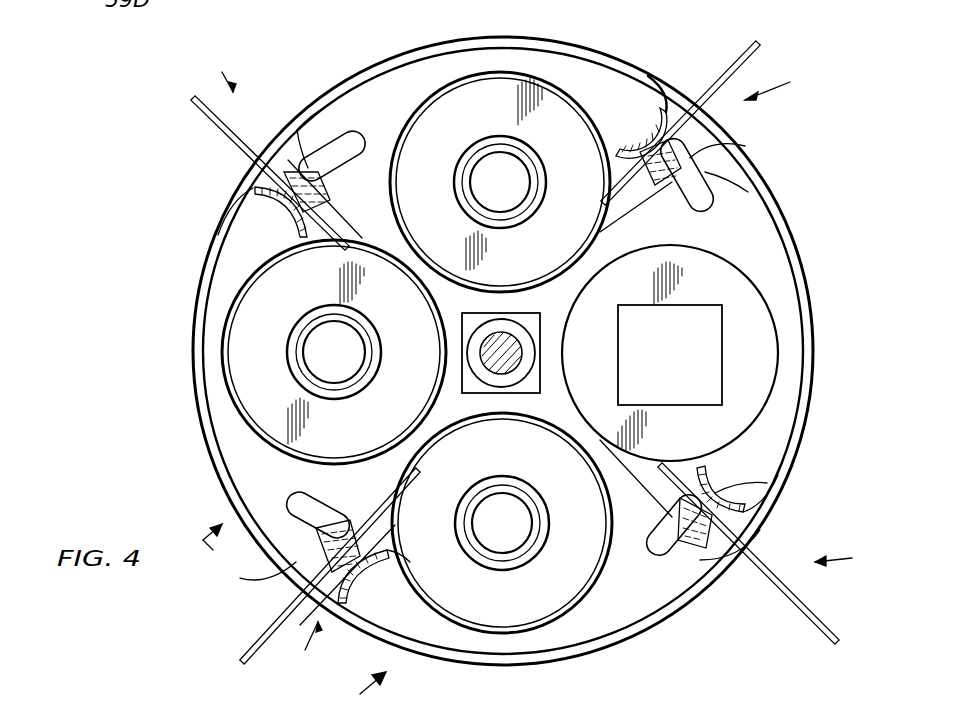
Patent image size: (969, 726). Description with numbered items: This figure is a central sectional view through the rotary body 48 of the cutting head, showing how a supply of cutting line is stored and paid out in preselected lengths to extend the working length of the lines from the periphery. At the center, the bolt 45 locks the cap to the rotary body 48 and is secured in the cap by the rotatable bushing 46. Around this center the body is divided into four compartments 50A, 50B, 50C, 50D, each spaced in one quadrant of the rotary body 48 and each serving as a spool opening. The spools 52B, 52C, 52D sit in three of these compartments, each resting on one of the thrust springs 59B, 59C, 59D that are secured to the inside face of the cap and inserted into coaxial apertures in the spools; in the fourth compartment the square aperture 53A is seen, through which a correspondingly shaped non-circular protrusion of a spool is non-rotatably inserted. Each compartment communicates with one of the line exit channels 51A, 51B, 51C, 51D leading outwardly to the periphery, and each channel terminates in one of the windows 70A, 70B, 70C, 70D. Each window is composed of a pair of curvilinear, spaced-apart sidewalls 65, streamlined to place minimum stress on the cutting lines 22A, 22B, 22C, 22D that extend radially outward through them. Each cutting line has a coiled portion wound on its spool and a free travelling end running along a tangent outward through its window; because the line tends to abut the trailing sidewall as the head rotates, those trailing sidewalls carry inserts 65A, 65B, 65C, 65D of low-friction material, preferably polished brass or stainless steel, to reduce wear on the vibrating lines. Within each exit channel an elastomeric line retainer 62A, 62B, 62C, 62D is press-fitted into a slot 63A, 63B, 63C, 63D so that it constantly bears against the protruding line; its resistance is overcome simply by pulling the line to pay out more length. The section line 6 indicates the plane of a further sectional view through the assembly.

The section line 6 is at (295, 601).
The cutting line 22A is at (840, 636).
The cutting line 22B is at (762, 44).
The cutting line 22C is at (270, 173).
The cutting line 22D is at (240, 660).
The bolt 45 is at (522, 358).
The rotatable bushing 46 is at (505, 318).
The rotary body 48 is at (811, 432).
The compartment 50A is at (748, 288).
The compartment 50B is at (532, 70).
The compartment 50C is at (226, 344).
The compartment 50D is at (570, 620).
The line exit channel 51A is at (652, 478).
The line exit channel 51B is at (620, 212).
The line exit channel 51C is at (352, 226).
The line exit channel 51D is at (377, 500).
The spool 52B is at (442, 86).
The spool 52C is at (224, 390).
The spool 52D is at (452, 622).
The aperture 53A is at (724, 357).
The thrust spring 59B is at (528, 204).
The thrust spring 59C is at (360, 356).
The thrust spring 59D is at (530, 500).
The elastomeric line retainer 62A is at (664, 545).
The elastomeric line retainer 62B is at (712, 178).
The elastomeric line retainer 62C is at (352, 150).
The elastomeric line retainer 62D is at (330, 520).
The slot 63A is at (680, 556).
The slot 63B is at (700, 204).
The slot 63C is at (330, 134).
The slot 63D is at (300, 498).
The sidewall 65 is at (656, 100).
The insert 65A is at (748, 492).
The insert 65B is at (636, 142).
The insert 65C is at (258, 206).
The insert 65D is at (352, 574).
The window 70A is at (855, 553).
The window 70B is at (786, 86).
The window 70C is at (220, 63).
The window 70D is at (302, 646).